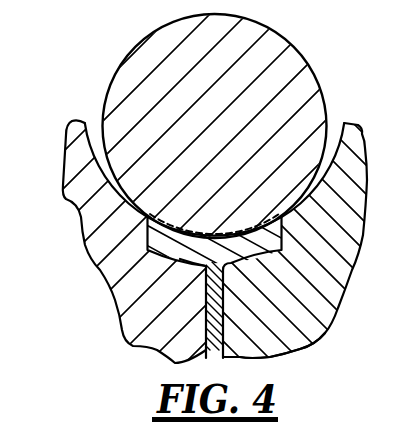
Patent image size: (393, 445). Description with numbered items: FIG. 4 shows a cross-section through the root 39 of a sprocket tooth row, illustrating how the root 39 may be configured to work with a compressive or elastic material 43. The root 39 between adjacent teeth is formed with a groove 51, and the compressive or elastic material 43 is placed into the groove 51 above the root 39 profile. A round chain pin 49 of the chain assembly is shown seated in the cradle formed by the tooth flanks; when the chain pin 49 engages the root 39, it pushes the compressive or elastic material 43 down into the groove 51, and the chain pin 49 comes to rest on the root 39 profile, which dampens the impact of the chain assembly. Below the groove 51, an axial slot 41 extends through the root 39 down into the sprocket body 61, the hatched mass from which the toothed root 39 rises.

The root 39 is at (103, 174).
The chain pin 49 is at (250, 70).
The compressive or elastic material 43 is at (240, 253).
The axial slot 41 is at (208, 308).
The groove 51 is at (188, 265).
The sprocket body 61 is at (265, 332).